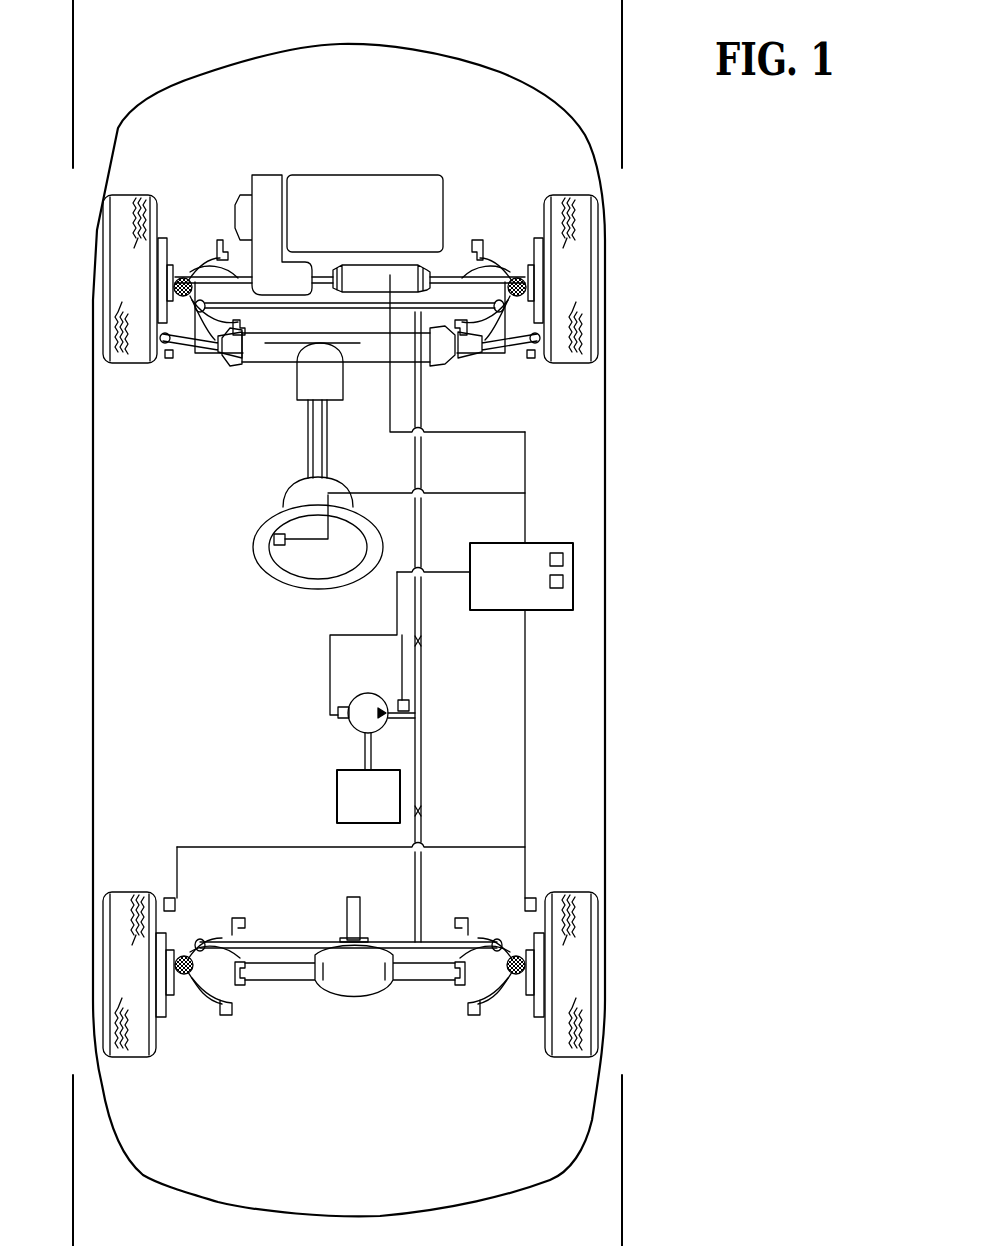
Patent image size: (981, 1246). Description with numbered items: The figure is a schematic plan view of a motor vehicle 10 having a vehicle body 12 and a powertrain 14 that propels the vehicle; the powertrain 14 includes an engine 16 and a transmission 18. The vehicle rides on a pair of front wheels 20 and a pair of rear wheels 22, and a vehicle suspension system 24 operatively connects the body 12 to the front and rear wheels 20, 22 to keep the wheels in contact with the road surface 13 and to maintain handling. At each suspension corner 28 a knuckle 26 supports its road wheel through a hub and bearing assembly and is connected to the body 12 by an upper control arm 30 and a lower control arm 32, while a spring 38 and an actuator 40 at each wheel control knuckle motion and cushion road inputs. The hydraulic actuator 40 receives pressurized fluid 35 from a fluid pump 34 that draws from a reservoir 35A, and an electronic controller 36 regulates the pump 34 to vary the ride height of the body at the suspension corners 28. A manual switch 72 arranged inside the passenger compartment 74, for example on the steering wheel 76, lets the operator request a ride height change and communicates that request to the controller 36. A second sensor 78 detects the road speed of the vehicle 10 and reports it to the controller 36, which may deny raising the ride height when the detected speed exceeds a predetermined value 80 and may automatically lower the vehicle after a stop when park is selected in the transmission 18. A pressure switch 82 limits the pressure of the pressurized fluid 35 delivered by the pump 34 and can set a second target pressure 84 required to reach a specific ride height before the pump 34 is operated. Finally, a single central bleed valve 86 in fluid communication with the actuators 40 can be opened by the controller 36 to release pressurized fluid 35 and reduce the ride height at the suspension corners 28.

The motor vehicle 10 is at (636, 487).
The vehicle body 12 is at (610, 632).
The road surface 13 is at (125, 29).
The powertrain 14 is at (350, 226).
The engine 16 is at (362, 210).
The transmission 18 is at (268, 192).
The front wheels 20 is at (103, 255).
The rear wheels 22 is at (105, 1005).
The vehicle suspension system 24 is at (171, 372).
The knuckle 26 is at (158, 312).
The suspension corner 28 is at (176, 248).
The upper control arm 30 is at (238, 338).
The lower control arm 32 is at (193, 240).
The fluid pump 34 is at (366, 694).
The pressurized fluid 35 is at (424, 645).
The reservoir 35A is at (350, 808).
The electronic controller 36 is at (509, 583).
The spring 38 is at (180, 284).
The actuator 40 is at (198, 262).
The manual switch 72 is at (280, 546).
The passenger compartment 74 is at (282, 487).
The steering wheel 76 is at (256, 542).
The second sensor 78 is at (172, 360).
The predetermined value 80 is at (563, 582).
The pressure switch 82 is at (338, 714).
The second target pressure 84 is at (563, 560).
The bleed valve 86 is at (410, 702).